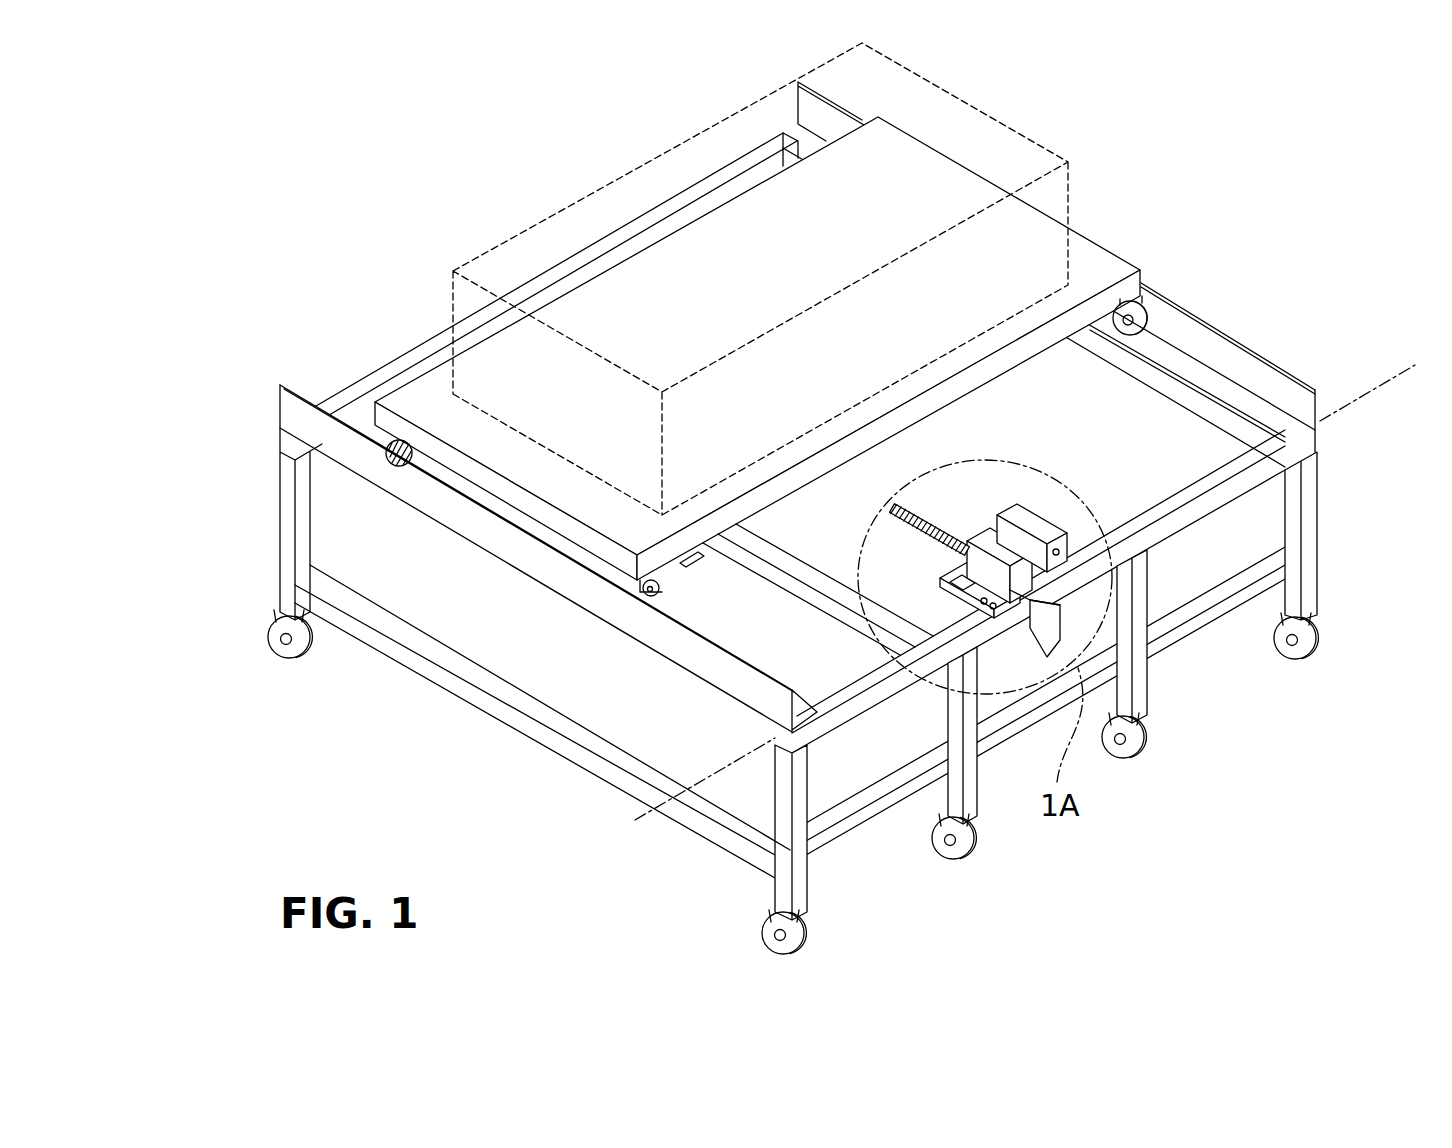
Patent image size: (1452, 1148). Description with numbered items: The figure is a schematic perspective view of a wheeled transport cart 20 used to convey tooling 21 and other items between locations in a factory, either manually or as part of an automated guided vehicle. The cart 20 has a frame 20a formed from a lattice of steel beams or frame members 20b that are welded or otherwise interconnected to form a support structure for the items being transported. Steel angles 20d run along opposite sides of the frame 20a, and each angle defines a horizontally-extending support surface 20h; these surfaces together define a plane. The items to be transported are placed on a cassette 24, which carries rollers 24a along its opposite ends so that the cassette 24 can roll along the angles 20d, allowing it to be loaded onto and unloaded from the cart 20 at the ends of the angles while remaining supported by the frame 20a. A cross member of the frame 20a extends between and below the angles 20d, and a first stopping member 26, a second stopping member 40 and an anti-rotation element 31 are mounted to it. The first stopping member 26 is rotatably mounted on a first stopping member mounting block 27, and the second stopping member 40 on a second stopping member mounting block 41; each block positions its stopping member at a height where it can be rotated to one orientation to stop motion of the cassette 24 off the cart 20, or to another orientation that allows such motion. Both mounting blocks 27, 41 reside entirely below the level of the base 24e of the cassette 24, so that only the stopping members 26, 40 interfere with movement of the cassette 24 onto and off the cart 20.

The wheeled transport cart 20 is at (756, 518).
The frame 20a is at (283, 525).
The frame members 20b is at (843, 828).
The steel angles 20d is at (447, 507).
The support surfaces 20h is at (795, 713).
The tooling 21 is at (1002, 123).
The cassette 24 is at (420, 397).
The rollers 24a is at (648, 584).
The base 24e is at (688, 560).
The first stopping member 26 is at (1068, 559).
The first stopping member mounting block 27 is at (977, 545).
The anti-rotation element 31 is at (968, 597).
The second stopping member 40 is at (1071, 598).
The second stopping member mounting block 41 is at (1022, 512).